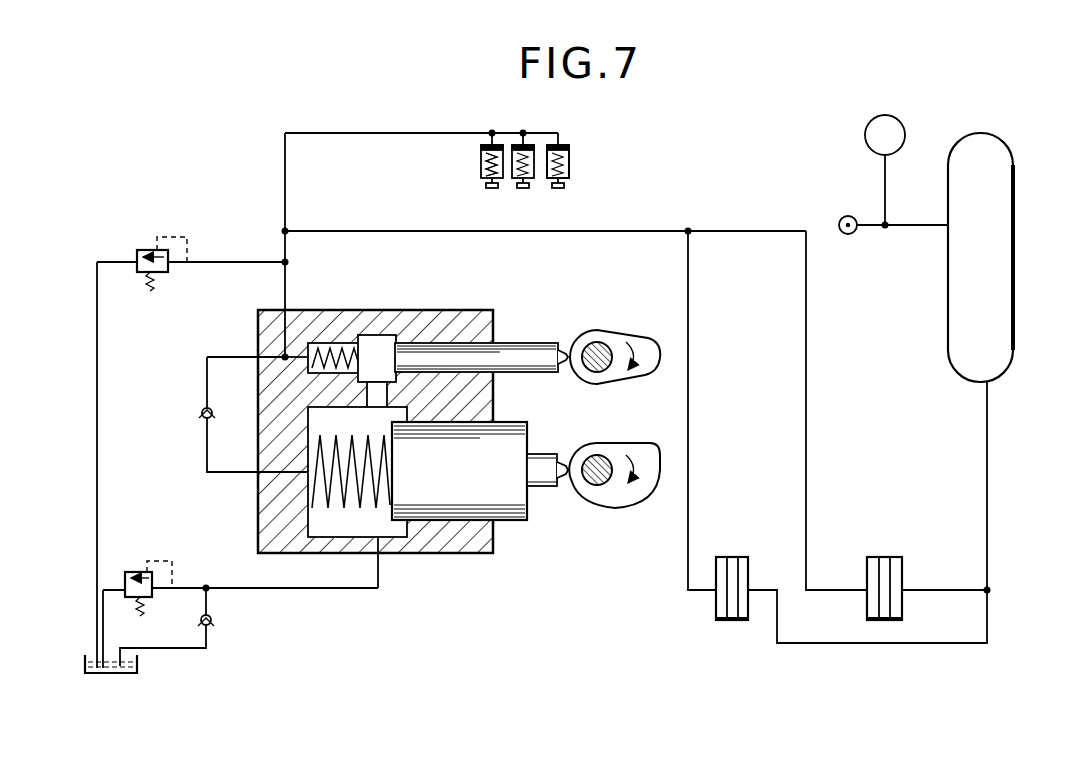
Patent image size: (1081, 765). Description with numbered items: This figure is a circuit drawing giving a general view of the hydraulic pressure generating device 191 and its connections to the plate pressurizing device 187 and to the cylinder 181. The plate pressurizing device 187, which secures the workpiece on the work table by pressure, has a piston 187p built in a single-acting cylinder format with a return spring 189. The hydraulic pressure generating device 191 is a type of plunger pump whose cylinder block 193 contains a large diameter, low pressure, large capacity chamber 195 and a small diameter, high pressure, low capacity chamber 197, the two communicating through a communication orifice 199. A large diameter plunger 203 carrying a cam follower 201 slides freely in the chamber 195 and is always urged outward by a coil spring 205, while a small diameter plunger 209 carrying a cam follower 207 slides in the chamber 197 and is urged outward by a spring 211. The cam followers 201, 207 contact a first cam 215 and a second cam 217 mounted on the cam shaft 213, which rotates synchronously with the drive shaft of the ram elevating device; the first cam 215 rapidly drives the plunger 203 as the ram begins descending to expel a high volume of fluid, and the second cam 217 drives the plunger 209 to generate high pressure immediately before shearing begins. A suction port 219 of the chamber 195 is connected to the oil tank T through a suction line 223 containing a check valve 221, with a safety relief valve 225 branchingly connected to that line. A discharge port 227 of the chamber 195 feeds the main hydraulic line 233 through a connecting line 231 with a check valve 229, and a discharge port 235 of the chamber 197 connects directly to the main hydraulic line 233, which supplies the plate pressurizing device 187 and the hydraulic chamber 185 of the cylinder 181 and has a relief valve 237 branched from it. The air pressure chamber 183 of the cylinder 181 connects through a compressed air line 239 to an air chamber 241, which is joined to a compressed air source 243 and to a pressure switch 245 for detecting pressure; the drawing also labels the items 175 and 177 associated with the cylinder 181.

The wheel brake 175 is at (731, 621).
The wheel brake 177 is at (806, 659).
The cylinder 181 is at (723, 557).
The air pressure chamber 183 is at (747, 625).
The hydraulic chamber 185 is at (716, 620).
The plate pressurizing device 187 is at (575, 143).
The piston 187p is at (569, 150).
The return spring 189 is at (485, 157).
The hydraulic pressure generating device 191 is at (413, 300).
The cylinder block 193 is at (484, 309).
The low pressure, large capacity chamber 195 is at (312, 524).
The high pressure, low capacity chamber 197 is at (347, 369).
The communication orifice 199 is at (388, 397).
The cam follower 201 is at (545, 488).
The large diameter plunger 203 is at (450, 522).
The spring 205 is at (352, 518).
The cam follower 207 is at (549, 342).
The small diameter plunger 209 is at (510, 372).
The spring 211 is at (345, 358).
The cam shaft 213 is at (592, 372).
The first cam 215 is at (628, 498).
The second cam 217 is at (620, 378).
The suction port 219 is at (383, 540).
The check valve 221 is at (214, 620).
The suction line 223 is at (258, 560).
The safety relief valve 225 is at (151, 599).
The discharge port 227 is at (289, 470).
The check valve 229 is at (203, 418).
The connecting line 231 is at (207, 387).
The main hydraulic line 233 is at (284, 293).
The discharge port 235 is at (302, 345).
The relief valve 237 is at (148, 250).
The compressed air line 239 is at (989, 468).
The air chamber 241 is at (1016, 352).
The compressed air source 243 is at (855, 233).
The pressure switch 245 is at (865, 128).
The oil tank T is at (140, 665).